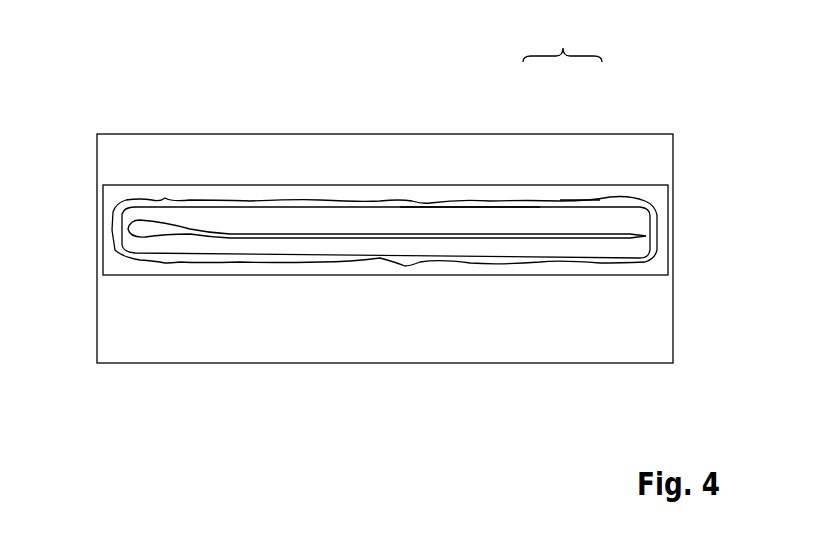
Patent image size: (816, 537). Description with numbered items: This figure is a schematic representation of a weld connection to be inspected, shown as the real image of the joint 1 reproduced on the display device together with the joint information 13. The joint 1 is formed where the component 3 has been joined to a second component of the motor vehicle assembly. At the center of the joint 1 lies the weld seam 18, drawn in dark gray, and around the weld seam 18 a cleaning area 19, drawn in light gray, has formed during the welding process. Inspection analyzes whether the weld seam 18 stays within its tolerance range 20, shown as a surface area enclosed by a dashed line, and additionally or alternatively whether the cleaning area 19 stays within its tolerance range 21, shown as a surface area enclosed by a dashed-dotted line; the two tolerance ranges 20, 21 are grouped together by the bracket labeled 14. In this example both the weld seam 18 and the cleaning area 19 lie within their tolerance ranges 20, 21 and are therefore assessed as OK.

The joint 1 is at (407, 262).
The component 3 is at (418, 345).
The joint information 13 is at (690, 106).
The electrode assembly 14 is at (562, 39).
The weld seam 18 is at (628, 236).
The cleaning area 19 is at (427, 204).
The tolerance range 20 is at (543, 192).
The tolerance range 21 is at (588, 187).